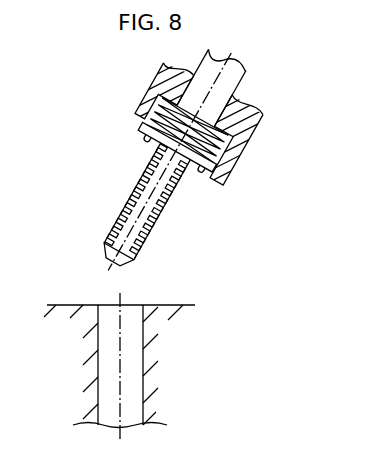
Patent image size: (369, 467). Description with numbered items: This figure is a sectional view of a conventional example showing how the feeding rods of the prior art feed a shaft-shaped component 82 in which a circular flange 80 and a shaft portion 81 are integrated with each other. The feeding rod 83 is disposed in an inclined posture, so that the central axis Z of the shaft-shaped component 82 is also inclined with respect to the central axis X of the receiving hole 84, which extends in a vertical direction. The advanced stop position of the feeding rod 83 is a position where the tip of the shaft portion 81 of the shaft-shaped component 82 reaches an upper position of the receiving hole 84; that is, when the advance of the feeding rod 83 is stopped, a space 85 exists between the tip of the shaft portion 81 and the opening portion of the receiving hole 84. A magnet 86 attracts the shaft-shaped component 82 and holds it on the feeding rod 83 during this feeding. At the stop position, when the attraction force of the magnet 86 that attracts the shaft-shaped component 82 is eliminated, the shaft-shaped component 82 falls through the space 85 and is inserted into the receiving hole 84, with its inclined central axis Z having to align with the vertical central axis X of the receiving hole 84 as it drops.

The circular flange 80 is at (141, 125).
The shaft portion 81 is at (157, 218).
The shaft-shaped component 82 is at (123, 192).
The feeding rod 83 is at (256, 149).
The receiving hole 84 is at (130, 383).
The space 85 is at (118, 282).
The magnet 86 is at (172, 104).
The central axis of the receiving hole X is at (120, 355).
The central axis of the shaft-shaped component Z is at (222, 71).